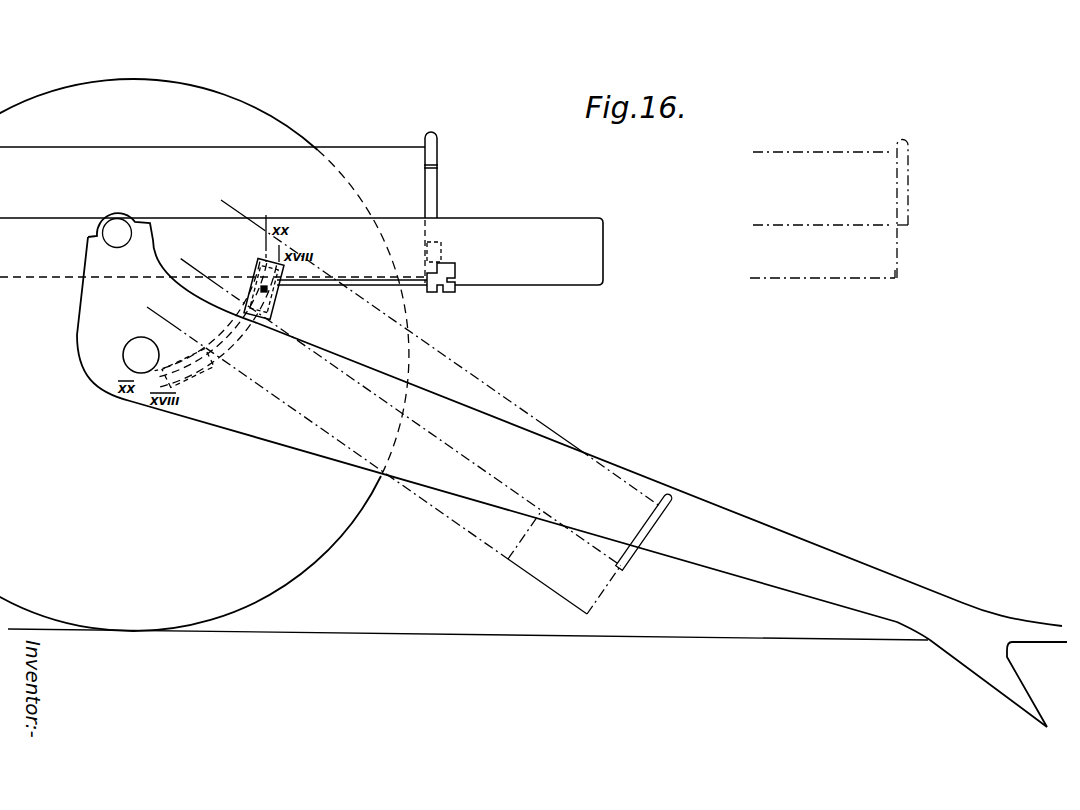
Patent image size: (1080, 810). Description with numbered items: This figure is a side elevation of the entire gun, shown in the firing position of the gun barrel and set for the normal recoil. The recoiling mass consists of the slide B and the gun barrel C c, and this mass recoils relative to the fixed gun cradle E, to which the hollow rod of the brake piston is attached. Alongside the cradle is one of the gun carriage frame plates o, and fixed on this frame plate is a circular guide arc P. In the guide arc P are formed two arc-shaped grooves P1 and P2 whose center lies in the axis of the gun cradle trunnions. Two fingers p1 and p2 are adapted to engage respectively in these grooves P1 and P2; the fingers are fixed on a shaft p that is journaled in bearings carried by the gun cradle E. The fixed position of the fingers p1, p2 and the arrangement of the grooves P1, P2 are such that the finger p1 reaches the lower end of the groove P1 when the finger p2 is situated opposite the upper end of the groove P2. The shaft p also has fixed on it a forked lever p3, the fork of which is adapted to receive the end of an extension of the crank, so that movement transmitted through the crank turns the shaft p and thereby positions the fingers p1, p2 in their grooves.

The gun carriage frame plate o is at (277, 432).
The gun cradle E is at (558, 275).
The gun barrel c is at (413, 196).
The slide B is at (888, 265).
The shaft p is at (380, 287).
The forked lever p3 is at (444, 294).
The circular guide arc P is at (441, 353).
The finger p2 is at (258, 296).
The arc-shaped groove P1 is at (268, 312).
The finger p1 is at (279, 288).
The arc-shaped groove P2 is at (193, 363).